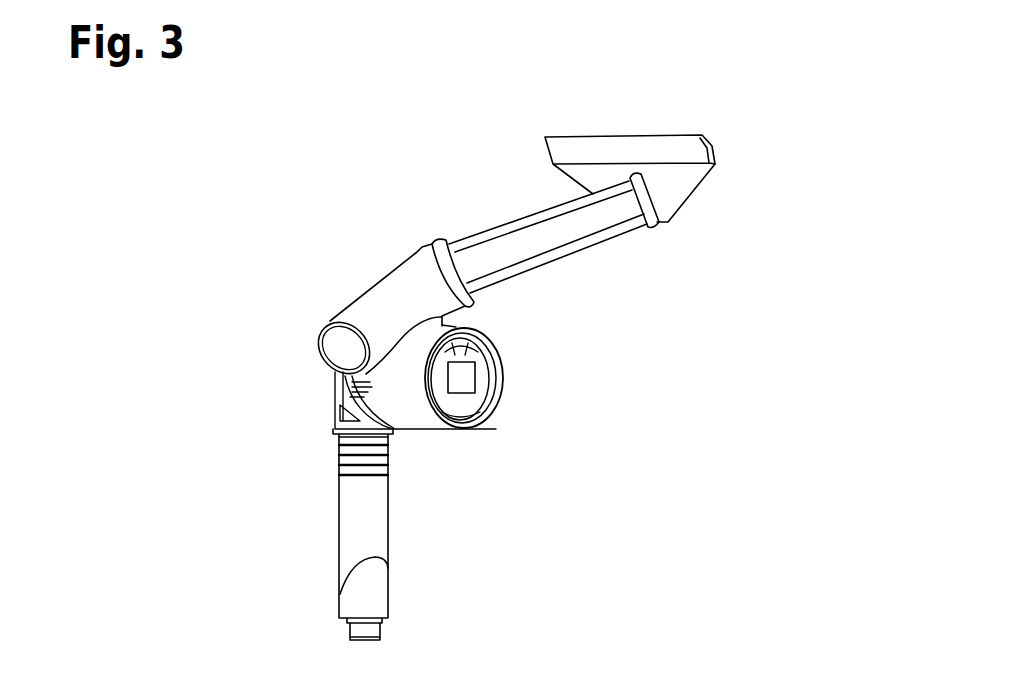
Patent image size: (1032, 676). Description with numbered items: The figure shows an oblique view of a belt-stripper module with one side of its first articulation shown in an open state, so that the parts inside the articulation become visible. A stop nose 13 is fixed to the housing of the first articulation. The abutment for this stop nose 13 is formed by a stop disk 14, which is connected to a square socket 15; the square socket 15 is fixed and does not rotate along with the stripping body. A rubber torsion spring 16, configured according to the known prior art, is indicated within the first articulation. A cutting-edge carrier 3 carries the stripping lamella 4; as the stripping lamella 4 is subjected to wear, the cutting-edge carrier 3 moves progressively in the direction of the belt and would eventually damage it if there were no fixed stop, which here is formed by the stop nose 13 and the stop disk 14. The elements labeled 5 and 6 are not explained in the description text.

The cutting-edge carrier 3 is at (562, 236).
The stripping lamella 4 is at (675, 187).
The nozzle cap 5 is at (657, 150).
The housing 6 is at (435, 302).
The stop nose 13 is at (480, 333).
The stop disk 14 is at (484, 383).
The square socket 15 is at (462, 392).
The rubber torsion spring 16 is at (498, 355).